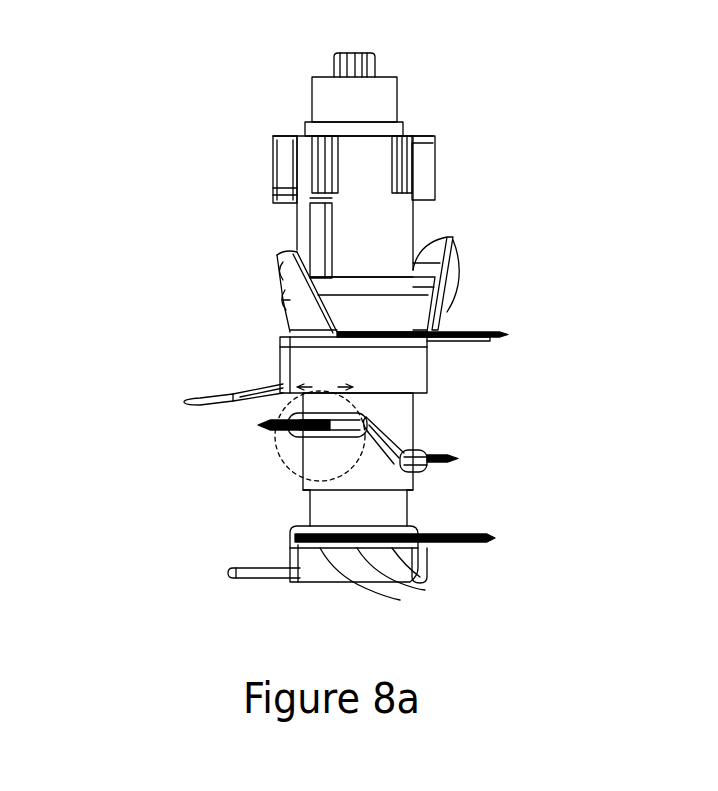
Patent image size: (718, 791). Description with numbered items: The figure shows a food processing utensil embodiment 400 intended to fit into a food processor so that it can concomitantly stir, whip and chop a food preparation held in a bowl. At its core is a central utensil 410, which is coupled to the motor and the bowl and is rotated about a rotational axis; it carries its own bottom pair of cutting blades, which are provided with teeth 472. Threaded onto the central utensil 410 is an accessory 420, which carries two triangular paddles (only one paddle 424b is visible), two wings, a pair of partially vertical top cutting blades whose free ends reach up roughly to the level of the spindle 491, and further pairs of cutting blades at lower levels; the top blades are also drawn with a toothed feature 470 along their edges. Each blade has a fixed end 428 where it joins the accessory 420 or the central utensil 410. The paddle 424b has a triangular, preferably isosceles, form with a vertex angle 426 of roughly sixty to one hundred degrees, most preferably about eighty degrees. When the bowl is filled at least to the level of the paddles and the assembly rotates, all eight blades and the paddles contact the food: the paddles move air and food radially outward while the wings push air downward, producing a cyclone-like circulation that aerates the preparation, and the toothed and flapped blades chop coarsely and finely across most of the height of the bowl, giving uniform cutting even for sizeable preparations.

The food processing utensil embodiment 400 is at (498, 165).
The spindle 491 is at (335, 63).
The vertex angle 426 is at (315, 200).
The paddle 424b is at (322, 240).
The fixed end 428 is at (370, 340).
The upper ribs 470 is at (453, 250).
The accessory 420 is at (423, 410).
The central utensil 410 is at (300, 510).
The teeth 472 is at (400, 600).